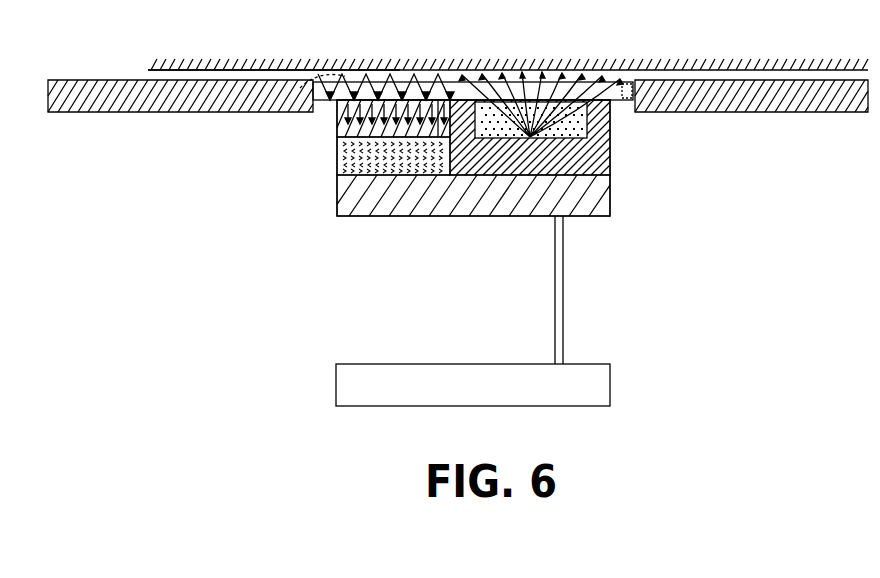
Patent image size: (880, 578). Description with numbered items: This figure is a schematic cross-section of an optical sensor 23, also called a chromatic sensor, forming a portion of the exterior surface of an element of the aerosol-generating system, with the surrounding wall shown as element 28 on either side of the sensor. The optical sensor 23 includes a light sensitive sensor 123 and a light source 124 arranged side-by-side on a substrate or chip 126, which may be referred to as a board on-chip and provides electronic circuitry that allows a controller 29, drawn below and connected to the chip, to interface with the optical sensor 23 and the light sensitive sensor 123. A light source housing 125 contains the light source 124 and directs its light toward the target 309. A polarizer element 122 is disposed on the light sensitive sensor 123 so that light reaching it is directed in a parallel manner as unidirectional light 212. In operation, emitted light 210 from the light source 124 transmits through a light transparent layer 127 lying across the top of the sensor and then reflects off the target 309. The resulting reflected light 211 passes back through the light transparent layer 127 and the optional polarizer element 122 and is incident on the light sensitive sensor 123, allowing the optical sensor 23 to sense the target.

The plate / housing wall 28 is at (118, 80).
The target 309 is at (690, 58).
The light transparent layer 127 is at (636, 102).
The optical sensor 23 is at (328, 221).
The substrate or chip 126 is at (572, 217).
The light source housing 125 is at (598, 162).
The light source 124 is at (620, 101).
The emitted light 210 is at (548, 72).
The polarizer element 122 is at (336, 118).
The reflected light 211 is at (381, 73).
The light sensitive sensor 123 is at (336, 160).
The unidirectional light 212 is at (438, 138).
The controller 29 is at (611, 386).